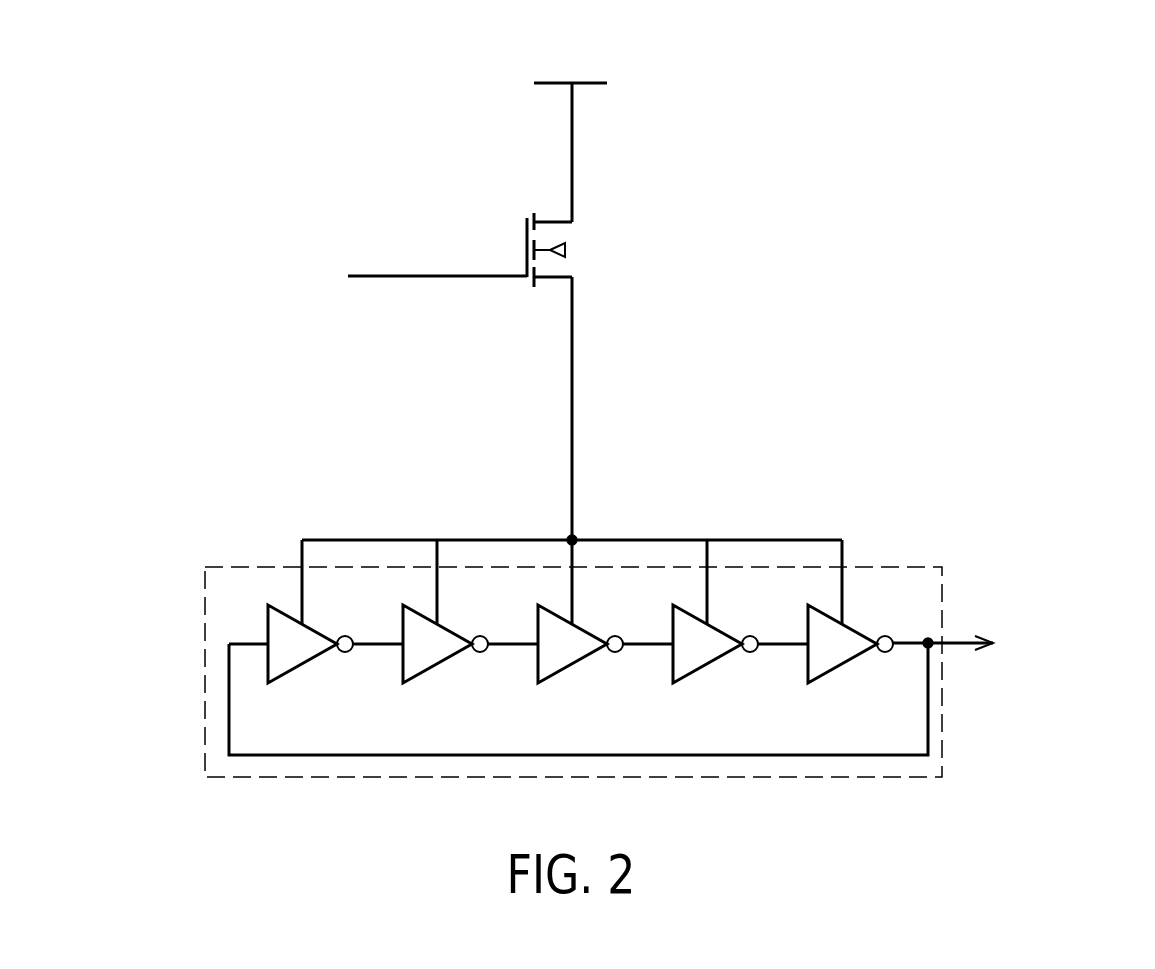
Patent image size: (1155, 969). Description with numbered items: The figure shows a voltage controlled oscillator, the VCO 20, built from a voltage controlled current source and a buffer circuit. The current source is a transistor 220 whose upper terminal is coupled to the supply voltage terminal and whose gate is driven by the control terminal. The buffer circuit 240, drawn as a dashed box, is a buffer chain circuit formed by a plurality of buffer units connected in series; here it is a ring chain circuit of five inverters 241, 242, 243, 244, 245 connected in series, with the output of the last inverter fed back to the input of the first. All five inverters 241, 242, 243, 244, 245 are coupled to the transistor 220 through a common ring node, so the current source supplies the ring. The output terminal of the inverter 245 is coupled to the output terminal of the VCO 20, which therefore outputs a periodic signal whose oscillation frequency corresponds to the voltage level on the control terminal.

The VCO 20 is at (870, 152).
The transistor 220 is at (597, 247).
The buffer circuit 240 is at (900, 565).
The inverter 241 is at (302, 667).
The inverter 242 is at (437, 667).
The inverter 243 is at (572, 667).
The inverter 244 is at (707, 667).
The inverter 245 is at (842, 667).